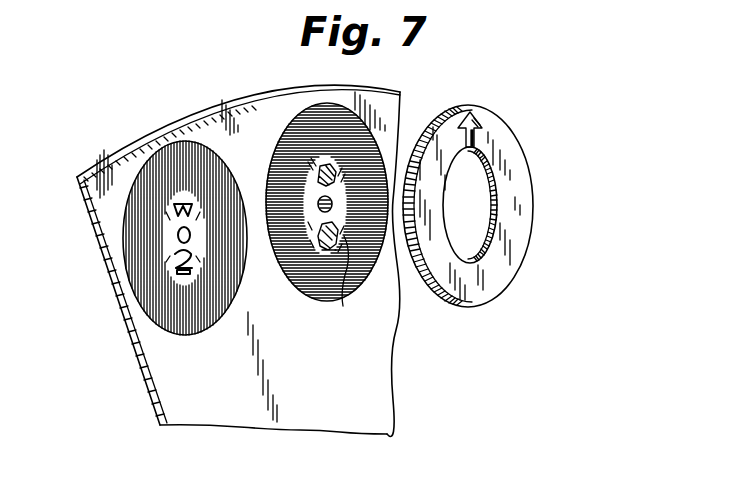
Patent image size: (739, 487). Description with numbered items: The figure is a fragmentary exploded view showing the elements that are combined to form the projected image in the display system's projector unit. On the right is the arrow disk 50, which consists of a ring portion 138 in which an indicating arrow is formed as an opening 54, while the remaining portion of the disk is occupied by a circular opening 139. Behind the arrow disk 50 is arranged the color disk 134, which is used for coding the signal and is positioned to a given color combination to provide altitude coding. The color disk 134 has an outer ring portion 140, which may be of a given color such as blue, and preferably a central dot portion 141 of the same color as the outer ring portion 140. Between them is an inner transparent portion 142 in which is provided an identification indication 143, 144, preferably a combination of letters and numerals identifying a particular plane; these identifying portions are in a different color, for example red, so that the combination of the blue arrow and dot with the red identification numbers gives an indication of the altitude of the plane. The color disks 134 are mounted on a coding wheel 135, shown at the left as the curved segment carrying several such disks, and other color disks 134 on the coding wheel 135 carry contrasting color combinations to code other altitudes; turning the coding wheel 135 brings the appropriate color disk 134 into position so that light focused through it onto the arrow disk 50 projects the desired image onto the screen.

The color disk 134 is at (166, 163).
The coding wheel 135 is at (228, 110).
The ring portion 138 is at (500, 283).
The circular opening 139 is at (497, 233).
The outer ring portion 140 is at (313, 285).
The central dot portion 141 is at (319, 201).
The inner transparent portion 142 is at (356, 279).
The identification indication 143 is at (317, 178).
The identification indication 144 is at (320, 236).
The arrow disk 50 is at (516, 140).
The opening 54 is at (480, 123).